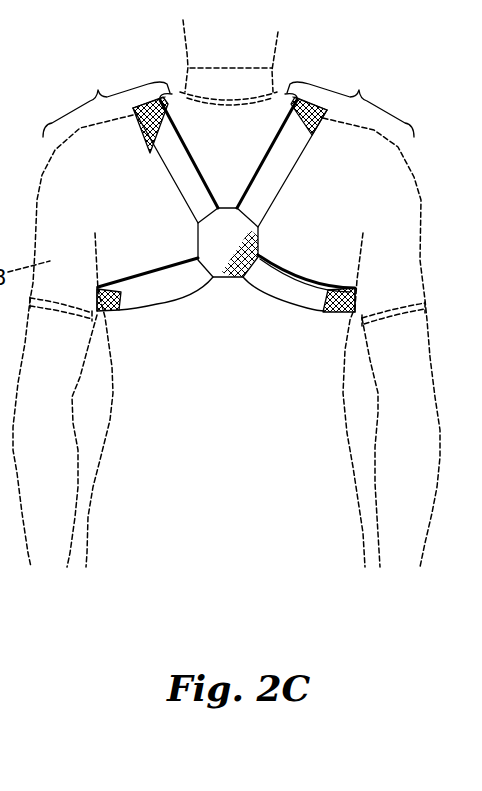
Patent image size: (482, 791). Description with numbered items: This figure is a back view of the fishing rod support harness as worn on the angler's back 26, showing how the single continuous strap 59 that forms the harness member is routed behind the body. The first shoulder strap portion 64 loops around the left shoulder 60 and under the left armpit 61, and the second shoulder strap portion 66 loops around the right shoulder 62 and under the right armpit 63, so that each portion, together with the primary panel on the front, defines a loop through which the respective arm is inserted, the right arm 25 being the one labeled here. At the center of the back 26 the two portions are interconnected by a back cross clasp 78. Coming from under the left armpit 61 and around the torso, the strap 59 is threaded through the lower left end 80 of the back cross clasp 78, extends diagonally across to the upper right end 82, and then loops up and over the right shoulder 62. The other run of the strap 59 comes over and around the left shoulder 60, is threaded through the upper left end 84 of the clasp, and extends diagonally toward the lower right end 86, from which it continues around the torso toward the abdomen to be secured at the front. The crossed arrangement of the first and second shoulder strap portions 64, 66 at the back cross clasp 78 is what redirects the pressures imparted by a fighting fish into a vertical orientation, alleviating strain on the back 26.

The right arm 25 is at (397, 203).
The back 26 is at (228, 258).
The strap 59 is at (280, 266).
The left shoulder 60 is at (106, 100).
The left armpit 61 is at (98, 338).
The right shoulder 62 is at (350, 101).
The right armpit 63 is at (357, 336).
The first shoulder strap portion 64 is at (157, 225).
The second shoulder strap portion 66 is at (298, 223).
The back cross clasp 78 is at (232, 278).
The lower left end 80 is at (203, 270).
The upper right end 82 is at (260, 216).
The upper left end 84 is at (203, 220).
The lower right end 86 is at (260, 270).